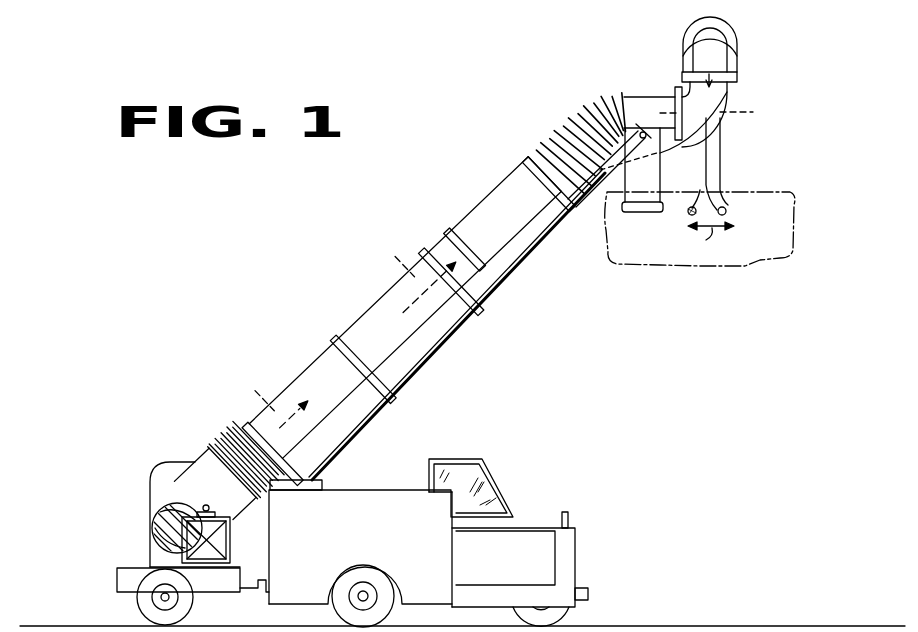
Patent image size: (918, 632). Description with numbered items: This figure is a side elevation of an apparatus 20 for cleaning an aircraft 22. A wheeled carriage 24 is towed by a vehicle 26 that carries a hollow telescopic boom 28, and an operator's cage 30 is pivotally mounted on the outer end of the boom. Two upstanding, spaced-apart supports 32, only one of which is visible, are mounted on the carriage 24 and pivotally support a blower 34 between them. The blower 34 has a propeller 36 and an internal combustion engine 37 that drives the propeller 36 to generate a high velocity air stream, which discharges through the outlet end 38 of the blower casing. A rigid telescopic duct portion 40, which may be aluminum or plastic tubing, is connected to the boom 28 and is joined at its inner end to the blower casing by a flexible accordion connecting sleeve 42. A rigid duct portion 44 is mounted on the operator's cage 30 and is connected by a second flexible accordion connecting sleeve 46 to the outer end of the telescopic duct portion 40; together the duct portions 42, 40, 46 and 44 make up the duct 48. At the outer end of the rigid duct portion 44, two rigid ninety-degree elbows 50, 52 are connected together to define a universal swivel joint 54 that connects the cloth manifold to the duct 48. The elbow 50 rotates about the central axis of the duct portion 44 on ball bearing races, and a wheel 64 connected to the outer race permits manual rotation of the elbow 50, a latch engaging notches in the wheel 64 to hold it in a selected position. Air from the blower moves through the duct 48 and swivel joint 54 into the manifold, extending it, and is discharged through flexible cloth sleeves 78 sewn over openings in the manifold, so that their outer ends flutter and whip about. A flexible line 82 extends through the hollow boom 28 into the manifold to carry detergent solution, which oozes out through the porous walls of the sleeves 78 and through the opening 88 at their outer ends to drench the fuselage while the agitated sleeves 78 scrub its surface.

The apparatus 20 is at (343, 241).
The aircraft 22 is at (747, 267).
The wheeled carriage 24 is at (115, 583).
The vehicle 26 is at (573, 547).
The telescopic boom 28 is at (436, 358).
The operator's cage 30 is at (642, 197).
The upstanding supports 32 is at (231, 538).
The blower 34 is at (207, 498).
The propeller 36 is at (172, 498).
The internal combustion engine 37 is at (188, 462).
The outlet end 38 is at (252, 431).
The rigid telescopic duct portion 40 is at (390, 292).
The flexible accordion connecting sleeve 42 is at (230, 452).
The rigid duct portion 44 is at (638, 103).
The flexible accordion connecting sleeve 46 is at (552, 117).
The duct 48 is at (499, 183).
The elbow 50 is at (728, 95).
The elbow 52 is at (700, 43).
The universal swivel joint 54 is at (715, 44).
The wheel 64 is at (700, 22).
The sleeves 78 is at (744, 177).
The line 82 is at (721, 153).
The opening 88 is at (727, 213).